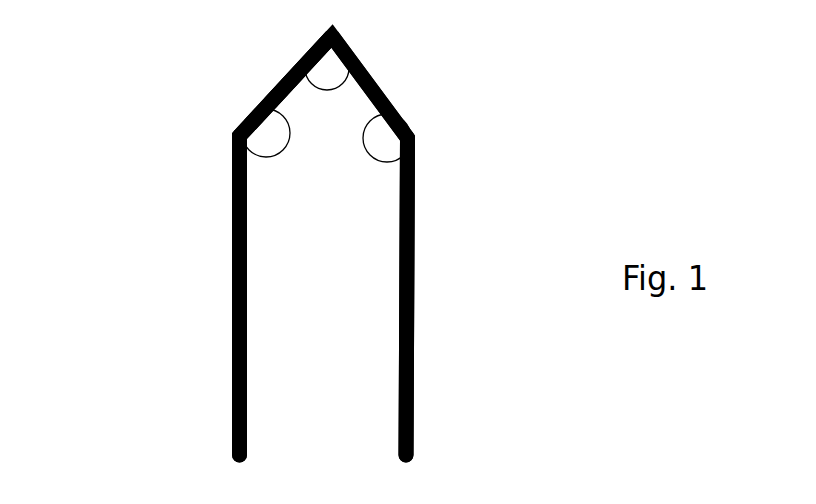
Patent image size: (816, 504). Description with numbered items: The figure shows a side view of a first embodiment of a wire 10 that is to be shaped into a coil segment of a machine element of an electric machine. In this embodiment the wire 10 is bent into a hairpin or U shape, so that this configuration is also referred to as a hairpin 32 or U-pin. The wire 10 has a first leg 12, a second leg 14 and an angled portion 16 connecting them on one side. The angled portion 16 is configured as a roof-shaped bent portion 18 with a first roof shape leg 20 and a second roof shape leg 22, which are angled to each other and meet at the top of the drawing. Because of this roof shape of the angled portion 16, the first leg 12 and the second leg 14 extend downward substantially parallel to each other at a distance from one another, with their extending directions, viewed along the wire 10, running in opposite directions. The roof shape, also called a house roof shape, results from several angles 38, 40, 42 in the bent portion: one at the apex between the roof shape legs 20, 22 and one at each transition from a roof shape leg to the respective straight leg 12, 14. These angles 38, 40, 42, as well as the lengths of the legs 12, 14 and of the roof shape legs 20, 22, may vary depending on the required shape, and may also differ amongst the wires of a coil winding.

The wire 10 is at (523, 170).
The first leg 12 is at (416, 303).
The second leg 14 is at (232, 350).
The angled portion 16 is at (240, 70).
The roof-shaped bent portion 18 is at (232, 82).
The first roof shape leg 20 is at (380, 87).
The second roof shape leg 22 is at (263, 101).
The hairpin 32 is at (128, 247).
The angle 38 is at (382, 136).
The angle 40 is at (337, 65).
The angle 42 is at (273, 136).